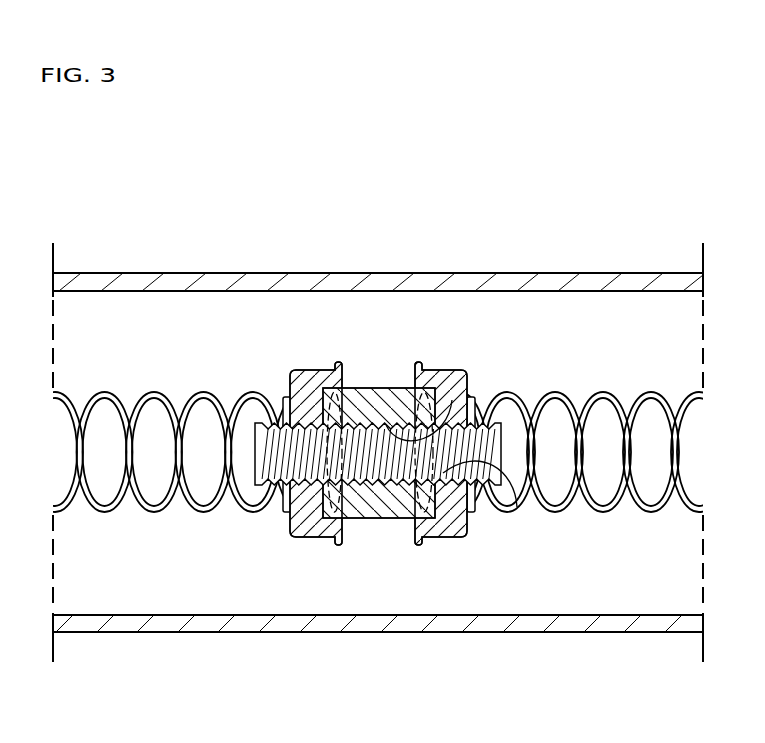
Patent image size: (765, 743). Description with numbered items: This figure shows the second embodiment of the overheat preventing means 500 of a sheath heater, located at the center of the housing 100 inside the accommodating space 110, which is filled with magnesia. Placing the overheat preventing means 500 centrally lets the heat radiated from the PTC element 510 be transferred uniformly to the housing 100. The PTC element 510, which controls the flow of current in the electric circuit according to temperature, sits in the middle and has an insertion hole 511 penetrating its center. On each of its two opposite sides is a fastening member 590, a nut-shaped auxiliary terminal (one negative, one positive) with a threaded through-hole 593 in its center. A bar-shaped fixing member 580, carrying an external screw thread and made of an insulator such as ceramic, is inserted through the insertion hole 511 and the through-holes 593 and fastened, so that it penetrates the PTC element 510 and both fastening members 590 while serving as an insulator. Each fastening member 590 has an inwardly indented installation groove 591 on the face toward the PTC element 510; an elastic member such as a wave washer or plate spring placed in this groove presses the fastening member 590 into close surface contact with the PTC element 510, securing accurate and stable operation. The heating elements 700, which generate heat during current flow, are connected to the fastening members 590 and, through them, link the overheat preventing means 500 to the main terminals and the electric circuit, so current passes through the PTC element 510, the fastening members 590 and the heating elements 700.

The housing 100 is at (620, 278).
The accommodating space 110 is at (197, 333).
The overheat preventing means 500 is at (366, 439).
The PTC element 510 is at (375, 398).
The insertion hole 511 is at (452, 400).
The fixing member 580 is at (277, 490).
The fastening member 590 is at (303, 380).
The installation groove 591 is at (345, 505).
The through-hole 593 is at (517, 507).
The heating element 700 is at (603, 512).